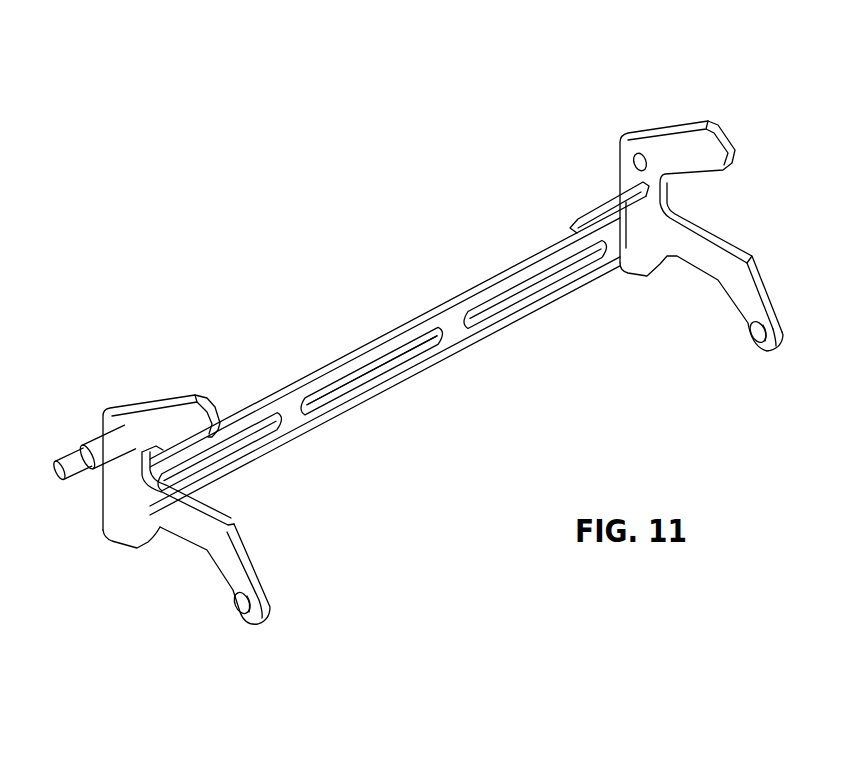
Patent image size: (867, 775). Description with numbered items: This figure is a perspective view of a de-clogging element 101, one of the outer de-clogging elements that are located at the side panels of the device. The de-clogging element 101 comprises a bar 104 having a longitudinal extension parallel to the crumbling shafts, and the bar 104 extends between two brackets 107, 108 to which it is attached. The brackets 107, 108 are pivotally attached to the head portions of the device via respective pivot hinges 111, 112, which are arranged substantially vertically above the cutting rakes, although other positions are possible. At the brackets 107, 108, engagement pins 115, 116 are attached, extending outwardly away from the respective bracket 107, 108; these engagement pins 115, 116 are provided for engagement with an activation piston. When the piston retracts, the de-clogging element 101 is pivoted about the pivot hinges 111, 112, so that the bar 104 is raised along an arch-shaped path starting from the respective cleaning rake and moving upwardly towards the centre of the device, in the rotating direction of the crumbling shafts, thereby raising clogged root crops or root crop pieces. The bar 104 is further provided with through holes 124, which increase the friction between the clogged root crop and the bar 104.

The de-clogging element 101 is at (160, 396).
The bar 104 is at (403, 325).
The bracket 107 is at (185, 545).
The bracket 108 is at (720, 233).
The pivot hinge 111 is at (247, 614).
The pivot hinge 112 is at (760, 338).
The engagement pin 115 is at (85, 442).
The engagement pin 116 is at (708, 121).
The through hole 124 is at (362, 376).